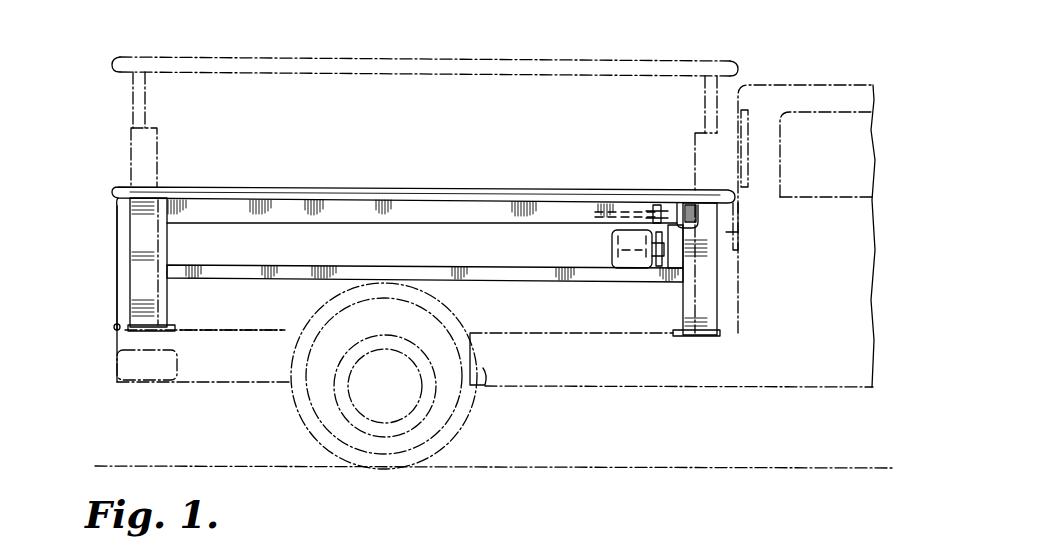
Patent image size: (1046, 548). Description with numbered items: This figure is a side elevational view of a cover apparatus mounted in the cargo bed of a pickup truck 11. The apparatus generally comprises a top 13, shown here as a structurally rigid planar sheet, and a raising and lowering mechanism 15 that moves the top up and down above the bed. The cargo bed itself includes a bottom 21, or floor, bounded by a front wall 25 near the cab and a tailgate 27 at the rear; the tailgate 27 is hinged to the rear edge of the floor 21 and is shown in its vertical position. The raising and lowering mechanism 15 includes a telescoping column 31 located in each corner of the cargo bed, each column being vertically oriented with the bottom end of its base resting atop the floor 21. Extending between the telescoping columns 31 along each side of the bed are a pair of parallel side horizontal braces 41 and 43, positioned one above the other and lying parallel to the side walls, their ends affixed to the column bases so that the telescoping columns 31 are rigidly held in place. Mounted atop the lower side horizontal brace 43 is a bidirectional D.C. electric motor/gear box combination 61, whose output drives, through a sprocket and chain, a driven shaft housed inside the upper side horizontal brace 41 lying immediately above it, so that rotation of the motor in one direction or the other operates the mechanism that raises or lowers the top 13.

The pickup truck 11 is at (717, 375).
The top 13 is at (572, 66).
The raising and lowering mechanism 15 is at (522, 286).
The bottom 21 is at (243, 331).
The front wall 25 is at (740, 232).
The tailgate 27 is at (116, 316).
The telescoping column 31 is at (163, 252).
The side horizontal brace 41 is at (343, 196).
The side horizontal brace 43 is at (690, 205).
The motor/gear box combination 61 is at (614, 249).